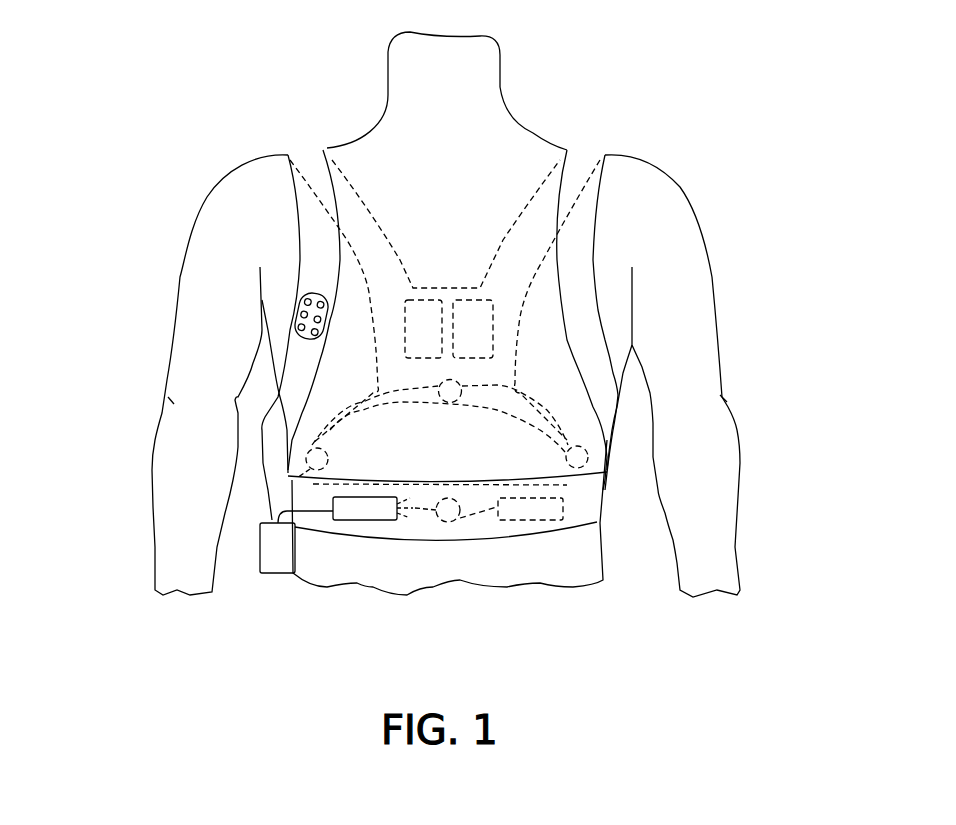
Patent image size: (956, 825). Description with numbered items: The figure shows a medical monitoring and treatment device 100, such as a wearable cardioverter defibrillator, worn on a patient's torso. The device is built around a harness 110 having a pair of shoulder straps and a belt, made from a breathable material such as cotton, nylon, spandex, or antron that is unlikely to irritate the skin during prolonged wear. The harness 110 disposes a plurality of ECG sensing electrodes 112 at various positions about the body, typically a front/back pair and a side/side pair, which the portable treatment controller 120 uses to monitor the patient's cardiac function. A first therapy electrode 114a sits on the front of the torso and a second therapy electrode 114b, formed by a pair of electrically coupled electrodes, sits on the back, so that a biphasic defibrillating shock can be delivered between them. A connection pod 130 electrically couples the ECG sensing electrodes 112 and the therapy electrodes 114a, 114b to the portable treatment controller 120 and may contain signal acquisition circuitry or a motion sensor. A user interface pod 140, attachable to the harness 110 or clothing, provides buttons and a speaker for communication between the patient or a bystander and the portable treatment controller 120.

The medical monitoring and treatment device 100 is at (180, 77).
The harness 110 is at (583, 152).
The ECG sensing electrodes 112 is at (305, 453).
The first therapy electrode 114a is at (527, 523).
The second therapy electrode 114b is at (403, 305).
The portable treatment controller 120 is at (260, 534).
The connection pod 130 is at (357, 520).
The user interface pod 140 is at (298, 318).